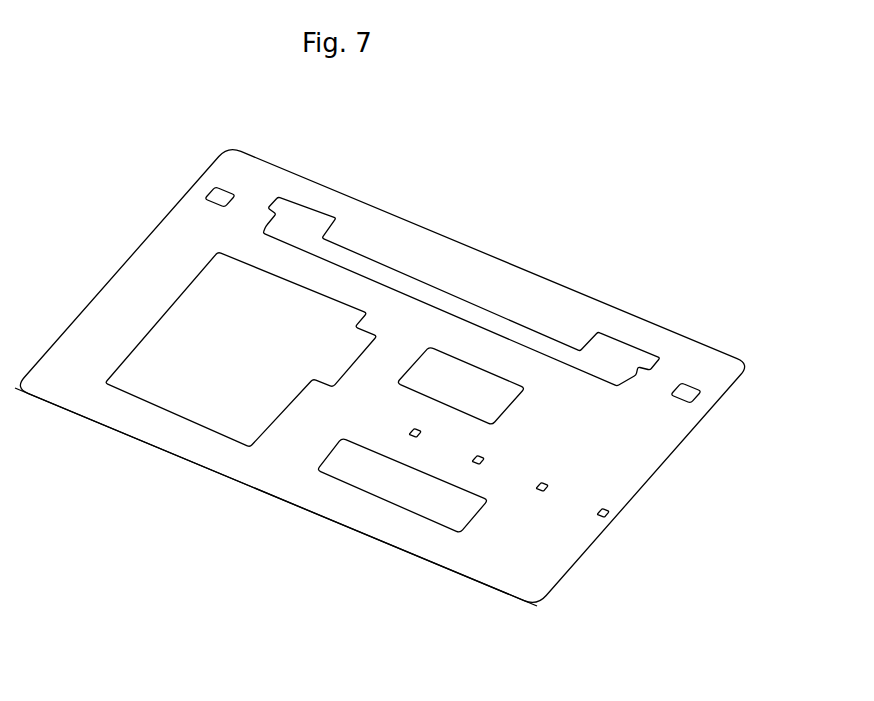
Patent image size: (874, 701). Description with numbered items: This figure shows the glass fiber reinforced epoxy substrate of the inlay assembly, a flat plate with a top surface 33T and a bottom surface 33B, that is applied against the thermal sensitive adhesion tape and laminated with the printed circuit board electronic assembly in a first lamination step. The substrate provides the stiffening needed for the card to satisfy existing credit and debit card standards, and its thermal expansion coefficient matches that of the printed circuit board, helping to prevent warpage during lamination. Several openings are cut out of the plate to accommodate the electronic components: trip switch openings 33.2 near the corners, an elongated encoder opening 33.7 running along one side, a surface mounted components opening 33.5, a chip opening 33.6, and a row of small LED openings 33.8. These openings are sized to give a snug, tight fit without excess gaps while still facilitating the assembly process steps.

The trip switch opening 33.2 is at (237, 183).
The encoder opening 33.7 is at (357, 245).
The bottom surface 33B is at (464, 267).
The top surface 33T is at (284, 514).
The surface mounted components opening 33.5 is at (488, 397).
The chip opening 33.6 is at (404, 512).
The LED opening 33.8 is at (653, 520).